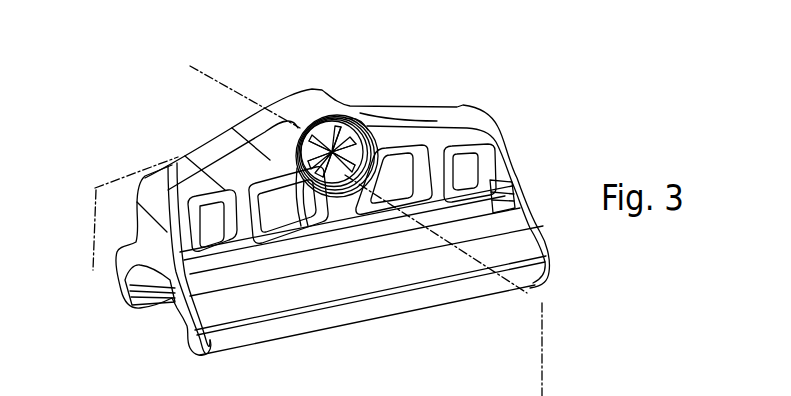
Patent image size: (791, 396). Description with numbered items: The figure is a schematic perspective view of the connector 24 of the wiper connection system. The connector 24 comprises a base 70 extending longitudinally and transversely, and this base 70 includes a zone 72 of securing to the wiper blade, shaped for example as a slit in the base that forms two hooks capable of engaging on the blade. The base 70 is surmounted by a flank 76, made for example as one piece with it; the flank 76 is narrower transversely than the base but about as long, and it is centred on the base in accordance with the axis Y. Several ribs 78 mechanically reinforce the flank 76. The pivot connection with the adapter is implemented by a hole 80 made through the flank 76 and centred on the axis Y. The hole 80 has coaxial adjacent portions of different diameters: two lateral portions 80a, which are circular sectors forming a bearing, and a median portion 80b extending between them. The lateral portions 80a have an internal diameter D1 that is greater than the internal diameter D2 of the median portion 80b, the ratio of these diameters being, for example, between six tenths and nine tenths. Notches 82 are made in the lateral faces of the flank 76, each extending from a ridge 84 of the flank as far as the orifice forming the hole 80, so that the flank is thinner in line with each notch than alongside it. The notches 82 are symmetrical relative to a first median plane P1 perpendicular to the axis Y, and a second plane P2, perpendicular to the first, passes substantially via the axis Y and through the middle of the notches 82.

The connector 24 is at (543, 118).
The base 70 is at (264, 356).
The zone of securing 72 is at (172, 327).
The flank 76 is at (486, 98).
The ribs 78 is at (157, 175).
The hole 80 is at (307, 132).
The lateral portion 80a is at (397, 146).
The median portion 80b is at (364, 156).
The notch 82 is at (338, 126).
The ridge 84 is at (437, 127).
The internal diameter of the lateral portions D1 is at (302, 148).
The internal diameter of the median portion D2 is at (339, 146).
The axis Y is at (220, 80).
The first median plane P1 is at (97, 187).
The second plane P2 is at (527, 293).